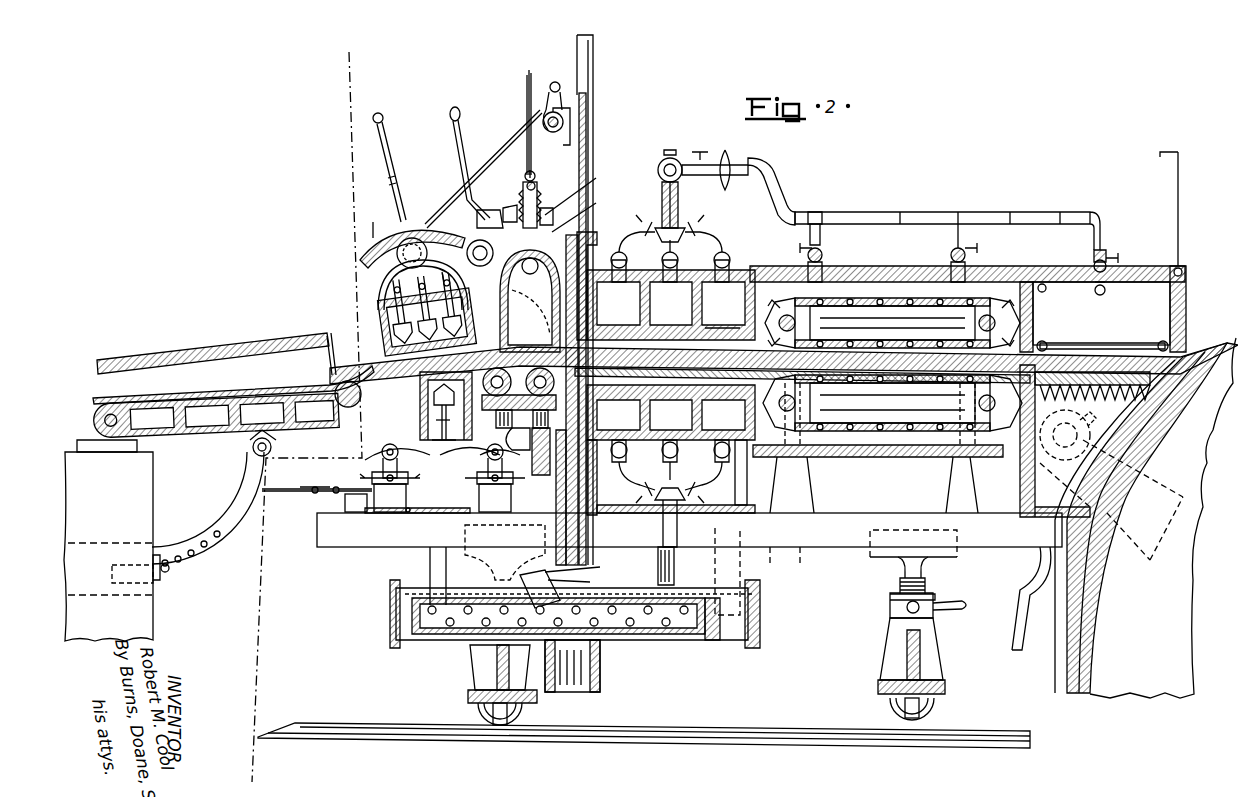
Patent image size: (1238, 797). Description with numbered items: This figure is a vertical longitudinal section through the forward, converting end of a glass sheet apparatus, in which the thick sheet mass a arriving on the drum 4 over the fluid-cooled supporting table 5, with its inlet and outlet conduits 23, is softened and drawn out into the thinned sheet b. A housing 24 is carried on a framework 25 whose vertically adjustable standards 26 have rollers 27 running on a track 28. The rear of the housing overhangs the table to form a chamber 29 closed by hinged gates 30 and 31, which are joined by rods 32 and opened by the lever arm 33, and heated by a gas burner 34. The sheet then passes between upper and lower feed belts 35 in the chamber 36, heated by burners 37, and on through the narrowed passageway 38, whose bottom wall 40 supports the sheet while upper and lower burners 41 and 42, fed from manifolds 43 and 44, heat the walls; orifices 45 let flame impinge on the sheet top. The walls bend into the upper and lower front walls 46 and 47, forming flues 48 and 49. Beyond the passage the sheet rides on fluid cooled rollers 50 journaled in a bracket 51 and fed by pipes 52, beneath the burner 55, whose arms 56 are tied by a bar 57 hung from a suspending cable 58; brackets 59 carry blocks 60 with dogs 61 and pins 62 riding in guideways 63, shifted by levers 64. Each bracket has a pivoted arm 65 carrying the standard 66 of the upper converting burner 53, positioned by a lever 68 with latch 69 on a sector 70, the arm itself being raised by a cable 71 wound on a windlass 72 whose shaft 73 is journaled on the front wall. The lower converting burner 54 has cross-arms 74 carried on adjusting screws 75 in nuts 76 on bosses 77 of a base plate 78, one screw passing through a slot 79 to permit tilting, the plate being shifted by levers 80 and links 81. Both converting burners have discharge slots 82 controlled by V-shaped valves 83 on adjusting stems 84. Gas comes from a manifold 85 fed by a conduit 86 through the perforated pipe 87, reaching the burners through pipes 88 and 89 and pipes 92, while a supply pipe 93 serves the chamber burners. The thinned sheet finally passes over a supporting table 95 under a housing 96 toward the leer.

The drum 4 is at (322, 52).
The supporting table 5 is at (1170, 420).
The sheet mass a is at (1198, 345).
The thinned sheet b is at (215, 398).
The inlet and outlet conduits 23 is at (1018, 572).
The housing 24 is at (855, 266).
The framework 25 is at (830, 547).
The vertically adjustable standards 26 is at (480, 655).
The rollers 27 is at (522, 714).
The track 28 is at (710, 733).
The chamber 29 is at (1101, 313).
The front gate 30 is at (1033, 305).
The rear gate 31 is at (1186, 300).
The rods 32 is at (1125, 343).
The control or lever arm 33 is at (1178, 188).
The gas burner 34 is at (660, 337).
The feed belts or aprons 35 is at (900, 298).
The chamber 36 is at (892, 314).
The gas burners 37 is at (820, 262).
The passageway 38 is at (712, 337).
The bottom wall 40 is at (708, 372).
The upper burner 41 is at (695, 270).
The lower burner 42 is at (670, 471).
The gas supply manifold 43 is at (662, 230).
The gas supply manifold 44 is at (660, 512).
The orifices 45 is at (606, 337).
The upper front wall 46 is at (588, 165).
The lower front wall 47 is at (512, 566).
The flue 48 is at (593, 245).
The flue 49 is at (566, 470).
The fluid cooled supporting rollers 50 is at (519, 389).
The bracket 51 is at (513, 417).
The pipes 52 is at (507, 456).
The upper burner 53 is at (382, 318).
The lower burner 54 is at (420, 398).
The burner 55 is at (512, 283).
The arms 56 is at (537, 188).
The bar 57 is at (527, 178).
The suspending cable 58 is at (527, 98).
The bracket 59 is at (478, 218).
The block 60 is at (587, 210).
The dogs 61 is at (512, 210).
The pins 62 is at (583, 188).
The slots or guideways 63 is at (533, 178).
The lever 64 is at (463, 150).
The bracket arm 65 is at (375, 220).
The arm or standard 66 is at (380, 277).
The lever 68 is at (390, 160).
The hand control latch 69 is at (413, 237).
The sector 70 is at (428, 228).
The cable 71 is at (472, 175).
The windlass 72 is at (550, 85).
The shaft 73 is at (563, 118).
The cross-arm 74 is at (395, 450).
The vertical adjusting screws 75 is at (382, 452).
The adjusting nuts 76 is at (372, 475).
The bosses 77 is at (388, 495).
The base plate 78 is at (411, 510).
The slot 79 is at (528, 450).
The levers 80 is at (300, 492).
The link 81 is at (352, 500).
The discharge slots 82 is at (385, 392).
The valves 83 is at (470, 316).
The adjusting stems 84 is at (445, 422).
The manifold 85 is at (740, 618).
The conduit 86 is at (600, 665).
The pipe 87 is at (672, 636).
The pipes 88 is at (579, 576).
The pipe 89 is at (430, 555).
The pipes 92 is at (674, 570).
The supply pipe 93 is at (868, 212).
The supporting table 95 is at (210, 438).
The housing 96 is at (185, 352).